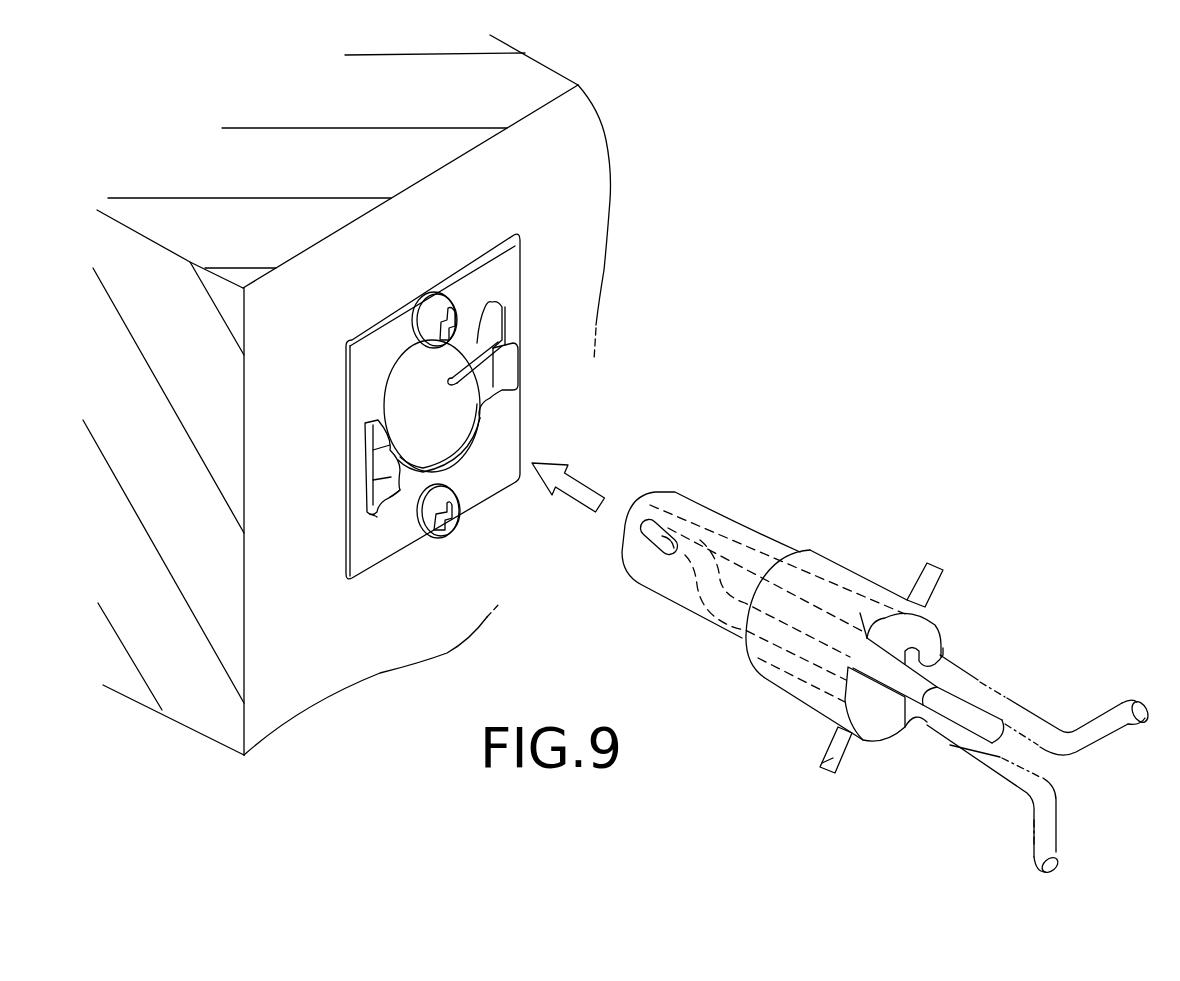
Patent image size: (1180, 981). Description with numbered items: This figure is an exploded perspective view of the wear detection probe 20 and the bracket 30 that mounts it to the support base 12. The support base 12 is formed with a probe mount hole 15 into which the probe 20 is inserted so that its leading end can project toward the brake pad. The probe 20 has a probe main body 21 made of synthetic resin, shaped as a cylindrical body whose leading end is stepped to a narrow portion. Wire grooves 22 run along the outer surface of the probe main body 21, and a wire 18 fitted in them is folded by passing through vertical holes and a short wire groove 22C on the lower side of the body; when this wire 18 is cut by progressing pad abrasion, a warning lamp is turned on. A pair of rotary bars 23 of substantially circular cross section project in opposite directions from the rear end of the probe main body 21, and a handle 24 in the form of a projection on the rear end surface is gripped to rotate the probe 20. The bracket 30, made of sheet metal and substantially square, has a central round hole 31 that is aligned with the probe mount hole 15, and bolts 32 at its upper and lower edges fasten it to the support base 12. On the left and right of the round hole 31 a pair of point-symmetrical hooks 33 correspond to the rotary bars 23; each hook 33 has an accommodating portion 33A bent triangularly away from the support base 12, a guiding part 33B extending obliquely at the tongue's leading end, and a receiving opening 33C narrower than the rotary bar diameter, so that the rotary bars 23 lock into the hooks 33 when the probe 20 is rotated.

The support base 12 is at (578, 133).
The probe mount hole 15 is at (507, 330).
The wire 18 is at (1070, 720).
The wear detection probe 20 is at (821, 489).
The probe main body 21 is at (840, 553).
The wire groove 22 is at (940, 657).
The short wire groove 22C is at (665, 532).
The rotary bar 23 is at (940, 563).
The handle 24 is at (973, 713).
The bracket 30 is at (531, 223).
The round hole 31 is at (525, 447).
The bolt 32 is at (447, 303).
The hook 33 is at (414, 420).
The accommodating portion 33A is at (378, 462).
The guiding part 33B is at (398, 492).
The receiving opening 33C is at (377, 517).